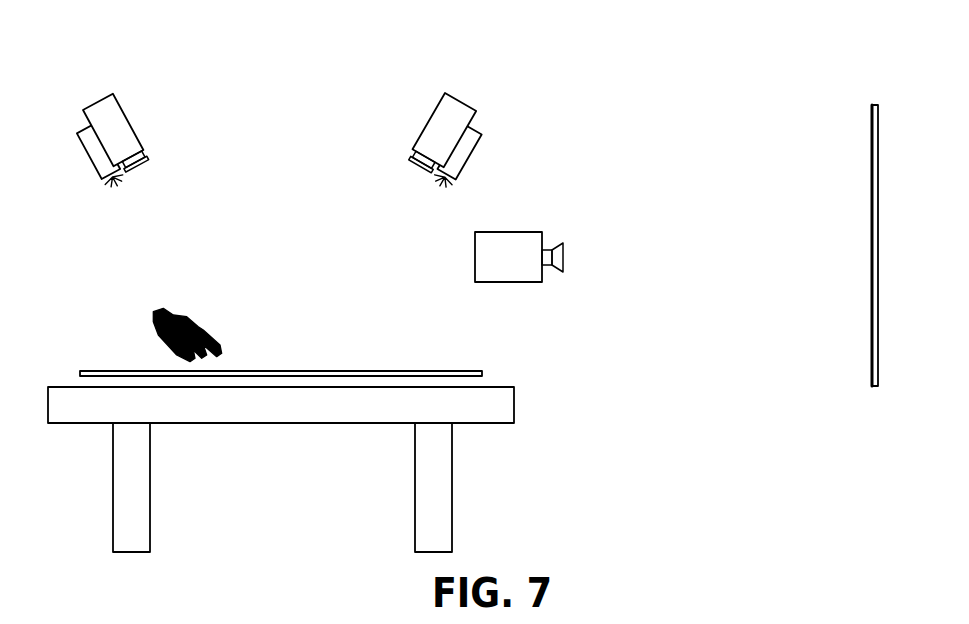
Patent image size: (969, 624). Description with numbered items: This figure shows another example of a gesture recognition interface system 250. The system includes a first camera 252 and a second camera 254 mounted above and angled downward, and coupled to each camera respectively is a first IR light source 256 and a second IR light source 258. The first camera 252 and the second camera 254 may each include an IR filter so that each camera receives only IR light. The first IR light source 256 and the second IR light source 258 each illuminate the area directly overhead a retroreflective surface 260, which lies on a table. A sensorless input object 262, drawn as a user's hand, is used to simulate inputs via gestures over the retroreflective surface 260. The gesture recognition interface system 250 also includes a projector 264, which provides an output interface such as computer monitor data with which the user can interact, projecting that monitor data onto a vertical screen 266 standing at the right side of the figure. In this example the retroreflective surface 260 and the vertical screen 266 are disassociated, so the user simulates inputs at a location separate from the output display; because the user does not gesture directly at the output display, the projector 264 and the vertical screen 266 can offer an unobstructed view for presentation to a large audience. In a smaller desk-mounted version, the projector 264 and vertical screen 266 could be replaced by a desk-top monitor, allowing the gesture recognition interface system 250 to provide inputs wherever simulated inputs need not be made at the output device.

The gesture recognition interface system 250 is at (114, 64).
The first camera 252 is at (130, 121).
The second camera 254 is at (432, 113).
The first IR light source 256 is at (98, 167).
The second IR light source 258 is at (467, 158).
The retroreflective surface 260 is at (458, 371).
The sensorless input object 262 is at (188, 318).
The projector 264 is at (531, 232).
The vertical screen 266 is at (872, 337).